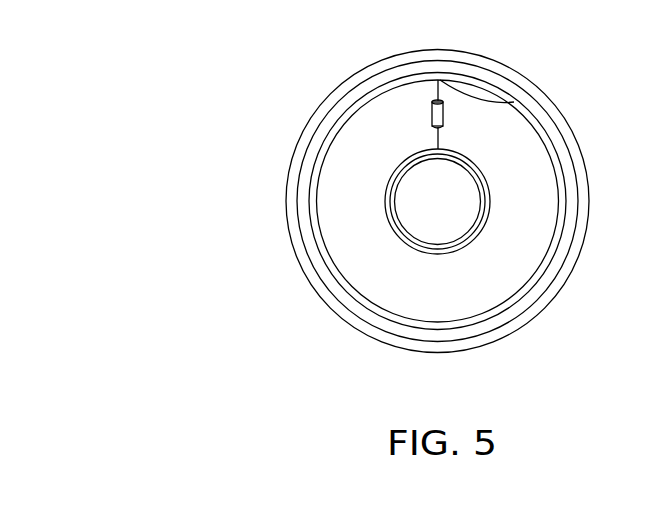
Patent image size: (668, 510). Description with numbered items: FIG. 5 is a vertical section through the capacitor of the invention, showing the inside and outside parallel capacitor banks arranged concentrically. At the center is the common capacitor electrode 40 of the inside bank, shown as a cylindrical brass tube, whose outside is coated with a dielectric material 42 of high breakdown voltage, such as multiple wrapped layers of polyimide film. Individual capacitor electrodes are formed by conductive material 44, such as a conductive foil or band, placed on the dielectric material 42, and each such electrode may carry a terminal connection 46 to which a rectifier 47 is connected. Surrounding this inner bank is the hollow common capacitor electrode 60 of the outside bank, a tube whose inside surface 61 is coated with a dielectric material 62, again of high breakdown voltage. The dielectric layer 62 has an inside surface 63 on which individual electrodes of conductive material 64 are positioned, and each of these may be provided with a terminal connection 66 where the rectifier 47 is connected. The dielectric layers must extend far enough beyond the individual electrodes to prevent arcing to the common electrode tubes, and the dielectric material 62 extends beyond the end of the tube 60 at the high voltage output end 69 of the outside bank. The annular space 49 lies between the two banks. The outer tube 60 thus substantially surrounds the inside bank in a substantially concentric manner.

The common capacitor electrode 40 is at (455, 218).
The dielectric material 42 is at (489, 211).
The conductive material 44 is at (489, 180).
The terminal connection 46 is at (444, 148).
The rectifier 47 is at (430, 110).
The annular space 49 is at (412, 258).
The common capacitor electrode 60 is at (337, 92).
The inside surface 61 is at (316, 133).
The dielectric material 62 is at (403, 74).
The inside surface 63 is at (340, 272).
The conductive material 64 is at (317, 197).
The terminal connection 66 is at (497, 96).
The output end 69 is at (302, 285).